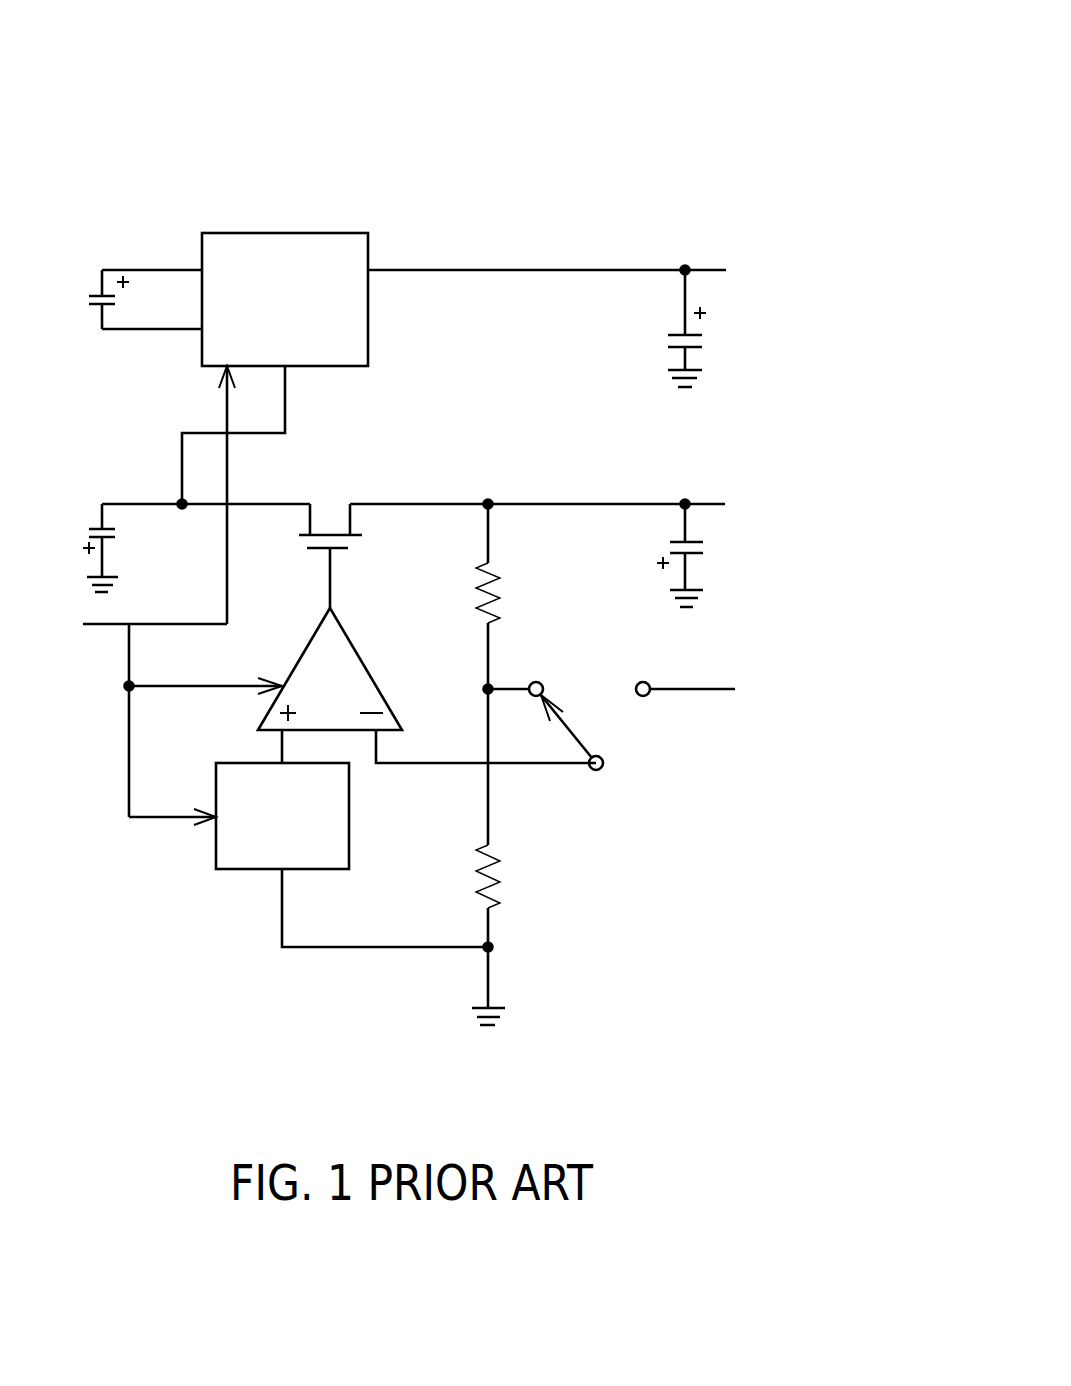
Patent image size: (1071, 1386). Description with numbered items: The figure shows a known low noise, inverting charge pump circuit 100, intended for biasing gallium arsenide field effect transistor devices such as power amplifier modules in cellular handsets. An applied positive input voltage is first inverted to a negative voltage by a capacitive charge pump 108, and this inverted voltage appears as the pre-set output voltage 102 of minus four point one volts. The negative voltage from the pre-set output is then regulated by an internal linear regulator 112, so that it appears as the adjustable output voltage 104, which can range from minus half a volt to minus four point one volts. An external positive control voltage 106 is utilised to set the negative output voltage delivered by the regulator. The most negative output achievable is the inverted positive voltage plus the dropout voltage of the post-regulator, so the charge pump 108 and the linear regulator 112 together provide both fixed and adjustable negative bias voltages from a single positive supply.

The charge pump circuit 100 is at (724, 90).
The pre-set output voltage 102 is at (110, 502).
The adjustable output voltage 104 is at (640, 502).
The external positive control voltage 106 is at (713, 268).
The capacitive charge pump 108 is at (286, 233).
The internal linear regulator 112 is at (647, 810).